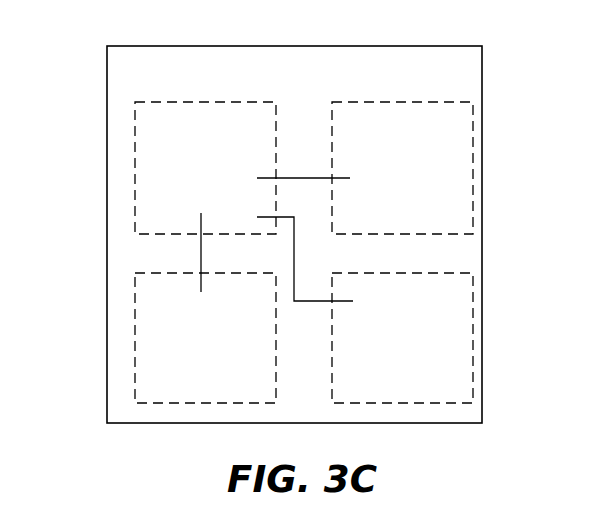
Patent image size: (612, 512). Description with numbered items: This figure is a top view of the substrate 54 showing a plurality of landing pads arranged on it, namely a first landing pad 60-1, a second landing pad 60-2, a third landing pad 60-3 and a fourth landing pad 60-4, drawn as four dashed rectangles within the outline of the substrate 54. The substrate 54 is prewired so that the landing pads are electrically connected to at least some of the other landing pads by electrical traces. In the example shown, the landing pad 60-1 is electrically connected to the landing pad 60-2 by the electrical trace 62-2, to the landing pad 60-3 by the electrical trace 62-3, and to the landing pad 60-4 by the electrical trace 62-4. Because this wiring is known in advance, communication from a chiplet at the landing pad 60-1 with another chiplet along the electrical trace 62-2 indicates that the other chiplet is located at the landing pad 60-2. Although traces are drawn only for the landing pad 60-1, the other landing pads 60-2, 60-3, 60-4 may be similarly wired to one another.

The substrate 54 is at (107, 103).
The landing pad 60-1 is at (185, 205).
The landing pad 60-2 is at (382, 205).
The landing pad 60-3 is at (185, 373).
The landing pad 60-4 is at (382, 373).
The electrical trace 62-2 is at (300, 178).
The electrical trace 62-3 is at (201, 261).
The electrical trace 62-4 is at (294, 260).